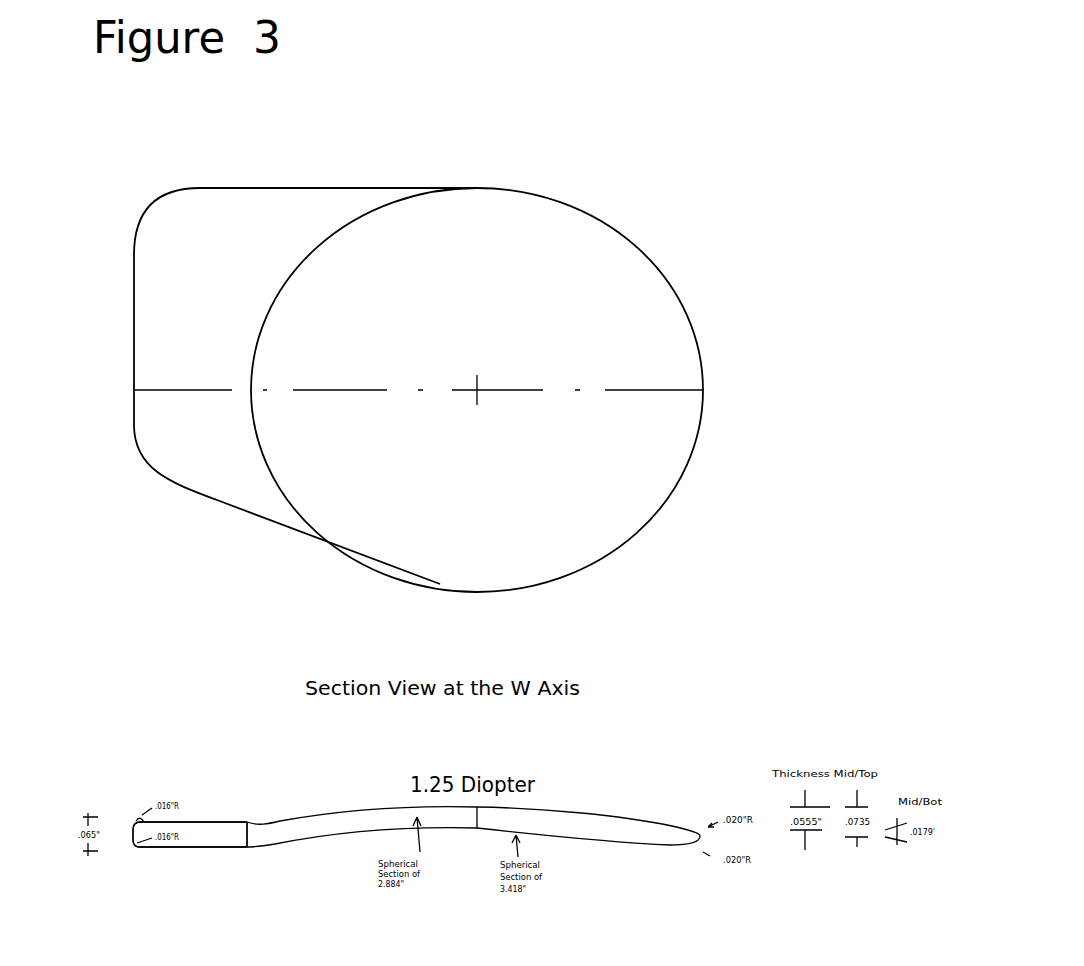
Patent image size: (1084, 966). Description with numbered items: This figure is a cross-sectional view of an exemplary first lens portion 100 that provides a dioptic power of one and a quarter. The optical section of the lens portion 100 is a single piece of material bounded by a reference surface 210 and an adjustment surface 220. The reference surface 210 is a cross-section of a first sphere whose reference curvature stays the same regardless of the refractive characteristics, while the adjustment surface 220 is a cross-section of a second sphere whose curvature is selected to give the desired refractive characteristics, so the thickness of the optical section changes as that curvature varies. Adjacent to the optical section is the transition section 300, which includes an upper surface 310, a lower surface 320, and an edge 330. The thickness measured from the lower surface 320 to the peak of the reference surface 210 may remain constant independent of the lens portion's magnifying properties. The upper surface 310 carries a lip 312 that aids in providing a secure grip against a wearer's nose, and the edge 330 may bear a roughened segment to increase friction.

The first lens portion 100 is at (737, 254).
The transition section 300 is at (235, 742).
The lip 312 is at (137, 815).
The upper surface 310 is at (232, 817).
The edge 330 is at (127, 832).
The lower surface 320 is at (225, 852).
The reference surface 210 is at (633, 813).
The adjustment surface 220 is at (633, 840).